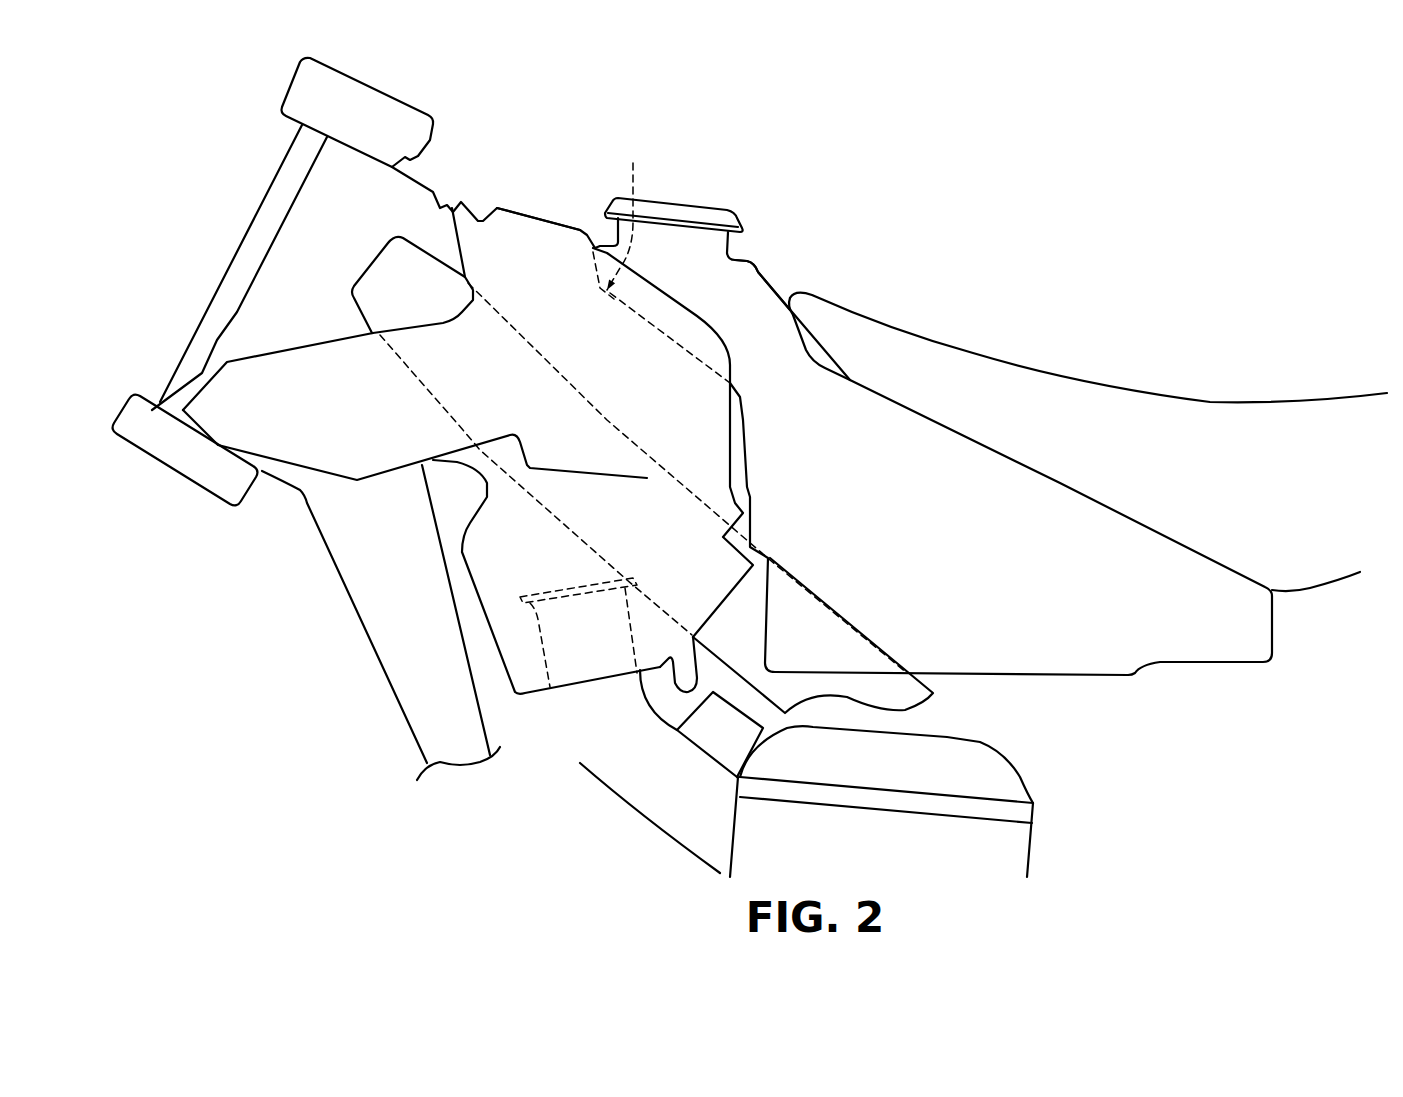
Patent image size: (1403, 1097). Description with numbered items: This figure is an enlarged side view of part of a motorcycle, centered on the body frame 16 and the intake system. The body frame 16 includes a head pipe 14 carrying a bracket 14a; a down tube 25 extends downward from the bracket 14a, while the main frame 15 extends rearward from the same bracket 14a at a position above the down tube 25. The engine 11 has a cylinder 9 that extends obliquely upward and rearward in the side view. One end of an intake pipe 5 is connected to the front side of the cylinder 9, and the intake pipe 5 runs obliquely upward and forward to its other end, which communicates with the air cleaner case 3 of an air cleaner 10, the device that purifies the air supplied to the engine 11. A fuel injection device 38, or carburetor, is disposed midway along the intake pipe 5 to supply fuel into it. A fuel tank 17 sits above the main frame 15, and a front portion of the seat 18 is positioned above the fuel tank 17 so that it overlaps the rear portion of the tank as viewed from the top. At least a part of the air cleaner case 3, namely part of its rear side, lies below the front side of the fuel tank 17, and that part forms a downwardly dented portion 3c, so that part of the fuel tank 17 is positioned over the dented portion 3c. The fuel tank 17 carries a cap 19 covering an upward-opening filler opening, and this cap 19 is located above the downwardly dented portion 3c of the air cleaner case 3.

The air cleaner case 3 is at (527, 683).
The downwardly dented portion 3c is at (626, 207).
The intake pipe 5 is at (633, 803).
The cylinder 9 is at (1017, 848).
The air cleaner 10 is at (553, 225).
The engine 11 is at (1010, 748).
The head pipe 14 is at (233, 252).
The bracket 14a is at (327, 168).
The main frame 15 is at (425, 265).
The body frame 16 is at (495, 107).
The fuel tank 17 is at (753, 282).
The seat 18 is at (1022, 368).
The cap 19 is at (698, 205).
The down tube 25 is at (380, 623).
The fuel injection device 38 is at (708, 738).